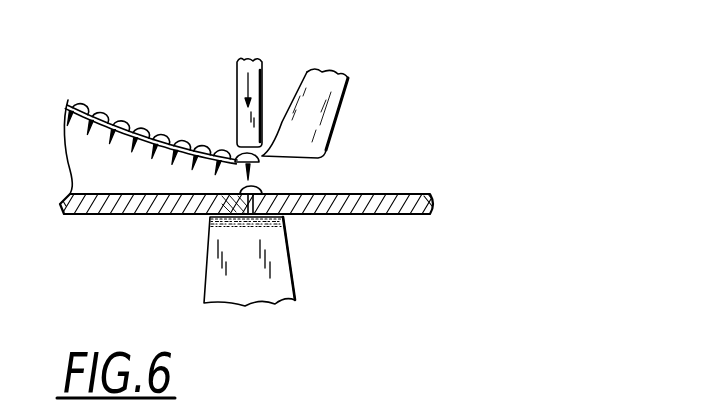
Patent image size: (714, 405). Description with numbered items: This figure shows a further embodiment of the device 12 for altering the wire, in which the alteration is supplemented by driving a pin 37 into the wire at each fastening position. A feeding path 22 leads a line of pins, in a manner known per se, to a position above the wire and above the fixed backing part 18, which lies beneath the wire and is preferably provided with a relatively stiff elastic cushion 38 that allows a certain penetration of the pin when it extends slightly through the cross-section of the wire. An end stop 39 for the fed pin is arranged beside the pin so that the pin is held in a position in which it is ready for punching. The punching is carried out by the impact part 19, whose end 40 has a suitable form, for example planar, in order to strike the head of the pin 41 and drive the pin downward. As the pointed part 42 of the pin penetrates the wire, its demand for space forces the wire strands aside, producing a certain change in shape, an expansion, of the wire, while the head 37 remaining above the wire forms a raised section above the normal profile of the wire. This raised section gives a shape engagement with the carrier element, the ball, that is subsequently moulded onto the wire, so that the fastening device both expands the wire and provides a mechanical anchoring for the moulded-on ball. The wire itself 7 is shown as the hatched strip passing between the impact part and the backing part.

The plate 7 is at (400, 195).
The device for alteration of the wire 12 is at (268, 74).
The backing part 18 is at (280, 255).
The impact part 19 is at (240, 88).
The feeding path 22 is at (110, 215).
The pin 37 is at (253, 192).
The elastic cushion 38 is at (212, 225).
The end stop 39 is at (332, 92).
The end of the impact part 40 is at (232, 148).
The head of the pin 41 is at (107, 194).
The pointed part of the pin 42 is at (245, 205).